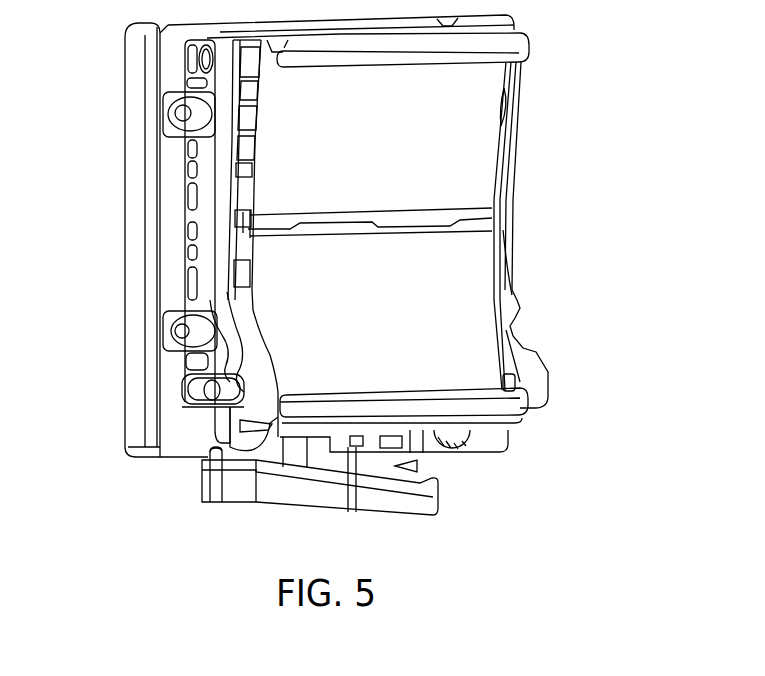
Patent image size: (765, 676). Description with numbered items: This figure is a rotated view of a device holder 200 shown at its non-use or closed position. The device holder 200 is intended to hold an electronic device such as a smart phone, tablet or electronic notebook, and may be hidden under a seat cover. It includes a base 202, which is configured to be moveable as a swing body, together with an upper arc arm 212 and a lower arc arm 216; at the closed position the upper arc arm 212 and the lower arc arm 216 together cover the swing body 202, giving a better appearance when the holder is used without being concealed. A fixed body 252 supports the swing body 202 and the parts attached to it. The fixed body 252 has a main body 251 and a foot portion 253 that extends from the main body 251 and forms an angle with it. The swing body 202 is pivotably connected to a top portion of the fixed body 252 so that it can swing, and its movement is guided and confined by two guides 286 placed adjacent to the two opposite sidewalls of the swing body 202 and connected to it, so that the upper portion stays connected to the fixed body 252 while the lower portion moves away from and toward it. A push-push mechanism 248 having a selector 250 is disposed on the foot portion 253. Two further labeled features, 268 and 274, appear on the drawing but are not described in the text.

The device holder 200 is at (592, 110).
The fixed body 252 is at (138, 78).
The main body 251 is at (162, 152).
The base 202 is at (183, 194).
The guide 286 is at (205, 248).
The upper arc arm 212 is at (476, 175).
The spring member 268 is at (489, 124).
The lower post portion 274 is at (482, 282).
The lower arc arm 216 is at (476, 329).
The selector 250 is at (372, 463).
The push-push mechanism 248 is at (399, 464).
The foot portion 253 is at (290, 490).